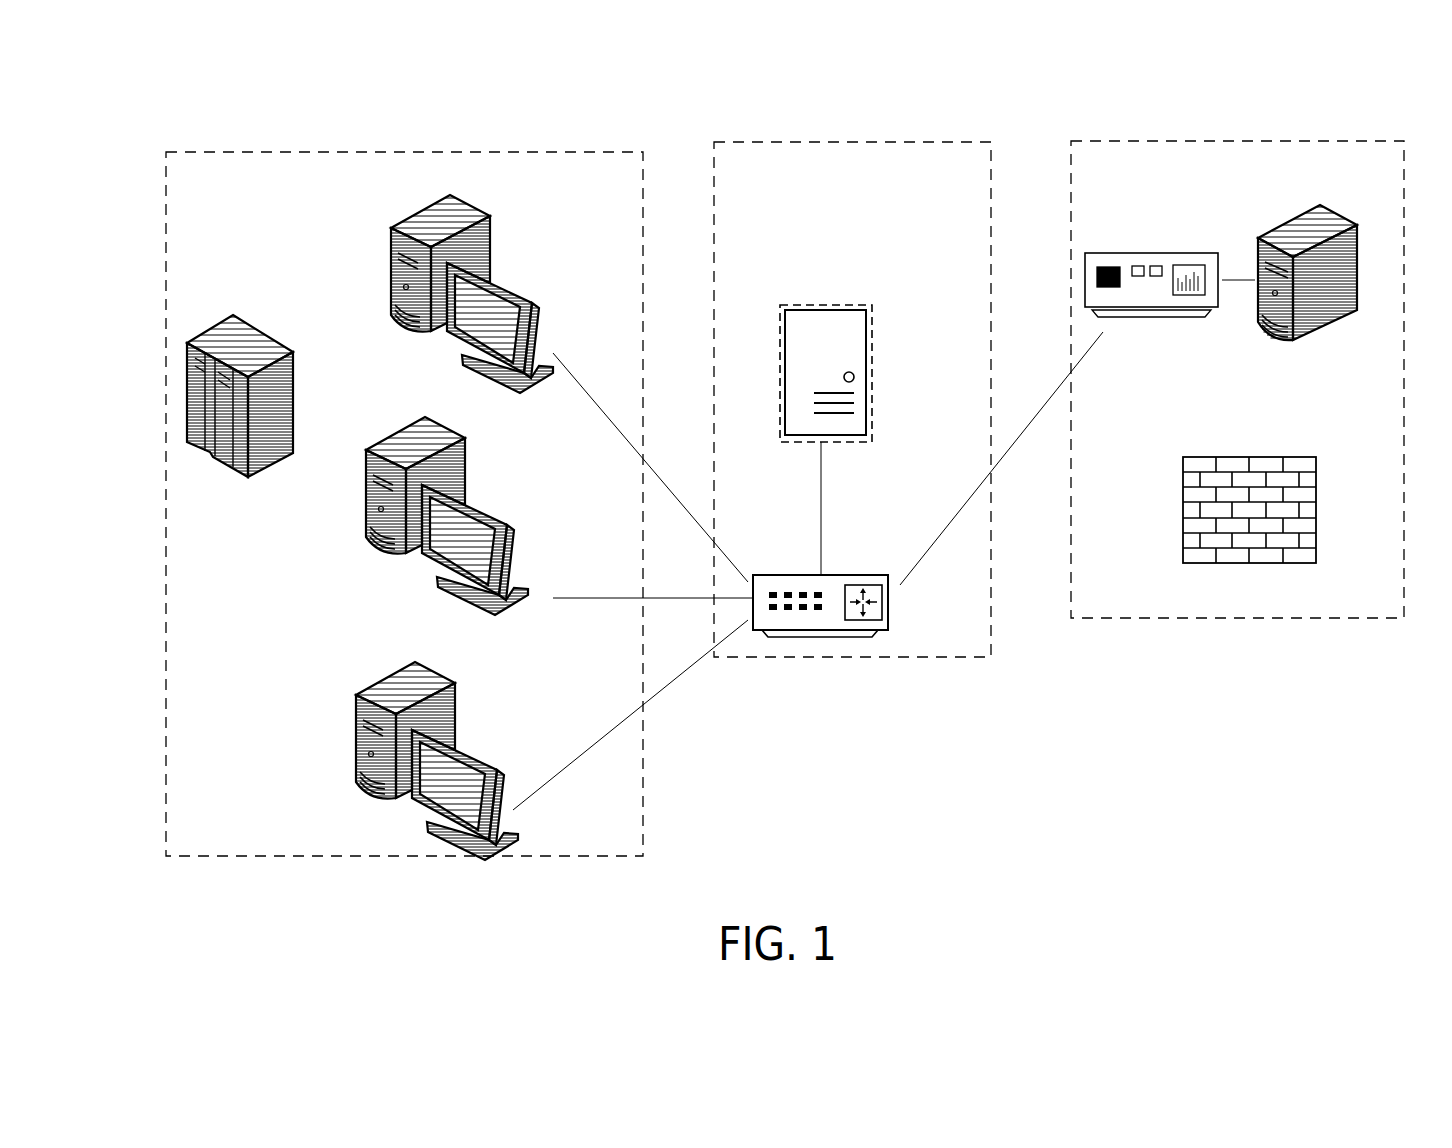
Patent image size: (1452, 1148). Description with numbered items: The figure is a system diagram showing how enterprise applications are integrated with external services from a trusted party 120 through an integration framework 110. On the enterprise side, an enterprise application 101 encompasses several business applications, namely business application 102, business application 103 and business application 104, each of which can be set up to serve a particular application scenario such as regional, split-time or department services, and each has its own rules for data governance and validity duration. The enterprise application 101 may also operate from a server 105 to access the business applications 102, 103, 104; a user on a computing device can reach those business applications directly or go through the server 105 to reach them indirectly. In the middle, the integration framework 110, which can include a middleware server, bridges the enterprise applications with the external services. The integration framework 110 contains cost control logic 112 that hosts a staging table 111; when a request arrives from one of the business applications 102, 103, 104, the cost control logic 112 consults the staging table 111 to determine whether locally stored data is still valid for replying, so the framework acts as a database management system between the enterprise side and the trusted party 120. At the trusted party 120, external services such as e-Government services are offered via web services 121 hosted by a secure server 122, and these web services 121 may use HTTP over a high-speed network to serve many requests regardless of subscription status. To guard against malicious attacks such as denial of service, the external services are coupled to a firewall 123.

The enterprise application 101 is at (217, 184).
The business application 102 is at (507, 255).
The business application 103 is at (497, 473).
The business application 104 is at (478, 712).
The server 105 is at (303, 395).
The integration framework 110 is at (766, 181).
The staging table 111 is at (877, 323).
The cost control logic 112 is at (862, 572).
The trusted party 120 is at (1116, 168).
The web services 121 is at (1180, 253).
The secure server 122 is at (1346, 218).
The firewall 123 is at (1228, 455).